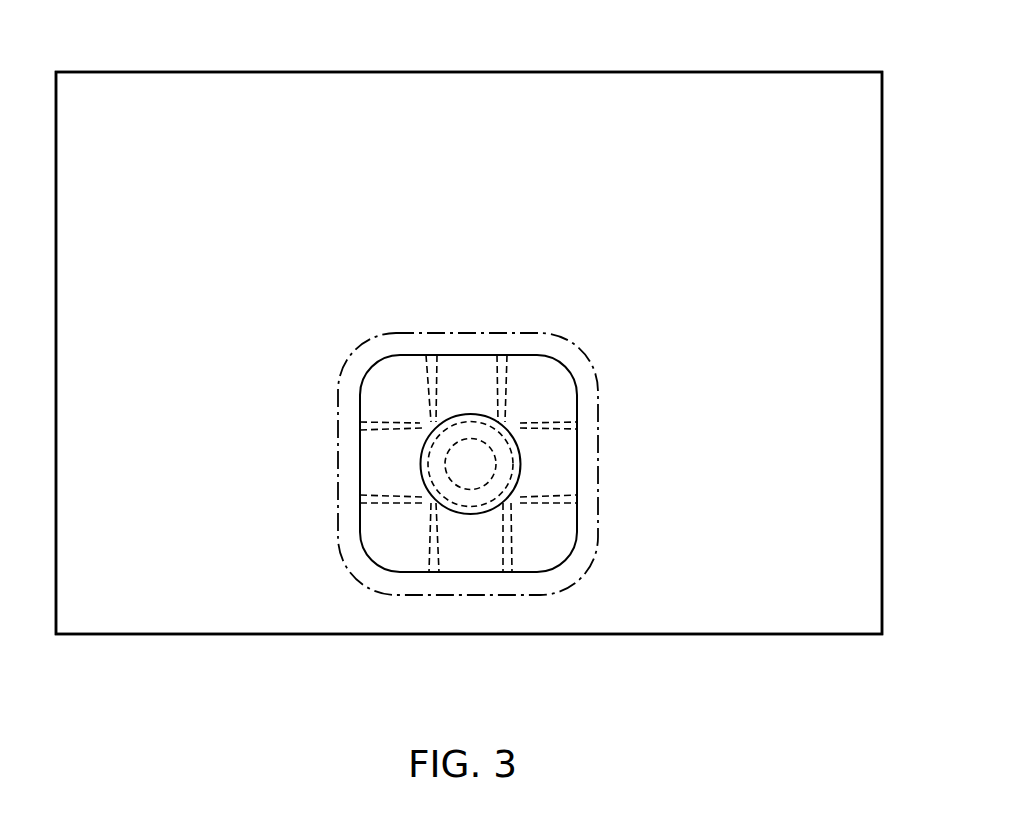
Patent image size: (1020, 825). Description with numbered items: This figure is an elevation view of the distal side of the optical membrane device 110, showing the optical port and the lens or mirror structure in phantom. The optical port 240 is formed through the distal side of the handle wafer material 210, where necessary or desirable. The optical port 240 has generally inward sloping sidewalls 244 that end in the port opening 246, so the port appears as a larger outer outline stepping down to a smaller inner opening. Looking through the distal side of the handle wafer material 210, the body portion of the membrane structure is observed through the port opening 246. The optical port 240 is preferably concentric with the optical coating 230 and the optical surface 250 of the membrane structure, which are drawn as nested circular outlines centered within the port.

The optical membrane device 110 is at (724, 56).
The handle wafer material 210 is at (828, 137).
The optical port 240 is at (473, 365).
The inward sloping sidewalls 244 is at (553, 394).
The port opening 246 is at (512, 482).
The optical coating 230 is at (502, 497).
The optical surface 250 is at (443, 473).